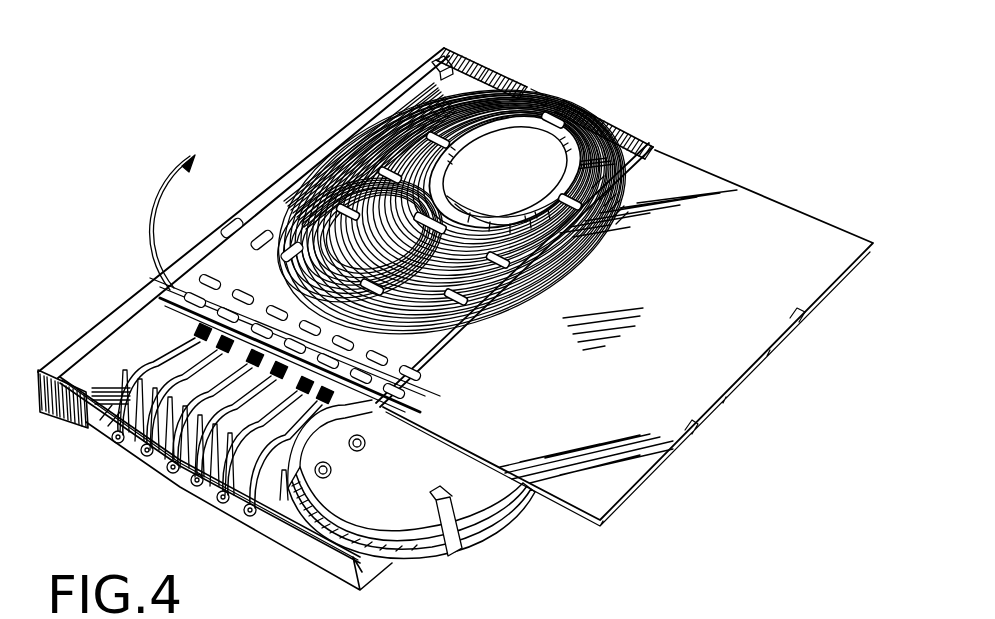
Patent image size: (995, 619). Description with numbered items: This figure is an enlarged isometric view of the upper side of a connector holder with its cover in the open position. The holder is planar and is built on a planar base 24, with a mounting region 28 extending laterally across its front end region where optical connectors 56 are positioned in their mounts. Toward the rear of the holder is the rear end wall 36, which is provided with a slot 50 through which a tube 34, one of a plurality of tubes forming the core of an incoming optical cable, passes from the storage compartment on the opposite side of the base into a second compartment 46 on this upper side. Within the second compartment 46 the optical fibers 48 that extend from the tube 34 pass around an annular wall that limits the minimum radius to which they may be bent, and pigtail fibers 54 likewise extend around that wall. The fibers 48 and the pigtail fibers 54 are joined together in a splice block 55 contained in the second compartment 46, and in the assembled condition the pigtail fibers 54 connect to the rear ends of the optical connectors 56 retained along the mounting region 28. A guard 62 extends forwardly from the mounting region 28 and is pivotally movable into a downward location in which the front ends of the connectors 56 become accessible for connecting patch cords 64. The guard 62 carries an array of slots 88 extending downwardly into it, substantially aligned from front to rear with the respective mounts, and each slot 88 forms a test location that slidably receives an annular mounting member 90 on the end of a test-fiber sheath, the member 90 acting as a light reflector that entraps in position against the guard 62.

The planar base 24 is at (240, 216).
The mounting region 28 is at (152, 283).
The tube 34 is at (167, 197).
The rear end wall 36 is at (484, 62).
The second compartment 46 is at (400, 90).
The optical fibers 48 is at (440, 62).
The slot 50 is at (545, 100).
The pigtail fibers 54 is at (393, 380).
The splice block 55 is at (356, 114).
The optical connectors 56 is at (227, 263).
The guard 62 is at (183, 477).
The patch cords 64 is at (507, 507).
The slots 88 is at (92, 412).
The annular mounting member 90 is at (252, 516).